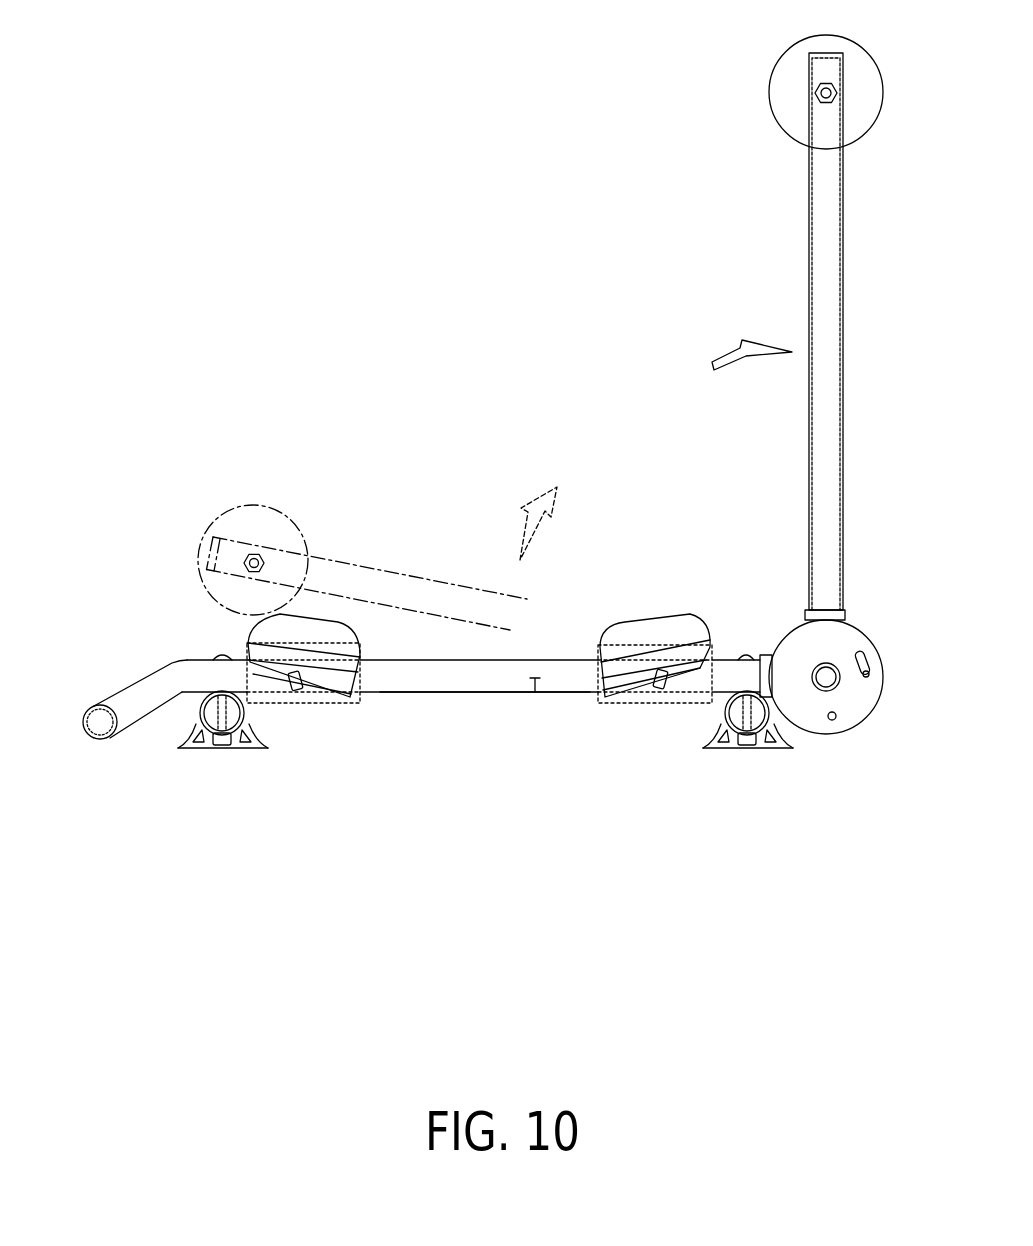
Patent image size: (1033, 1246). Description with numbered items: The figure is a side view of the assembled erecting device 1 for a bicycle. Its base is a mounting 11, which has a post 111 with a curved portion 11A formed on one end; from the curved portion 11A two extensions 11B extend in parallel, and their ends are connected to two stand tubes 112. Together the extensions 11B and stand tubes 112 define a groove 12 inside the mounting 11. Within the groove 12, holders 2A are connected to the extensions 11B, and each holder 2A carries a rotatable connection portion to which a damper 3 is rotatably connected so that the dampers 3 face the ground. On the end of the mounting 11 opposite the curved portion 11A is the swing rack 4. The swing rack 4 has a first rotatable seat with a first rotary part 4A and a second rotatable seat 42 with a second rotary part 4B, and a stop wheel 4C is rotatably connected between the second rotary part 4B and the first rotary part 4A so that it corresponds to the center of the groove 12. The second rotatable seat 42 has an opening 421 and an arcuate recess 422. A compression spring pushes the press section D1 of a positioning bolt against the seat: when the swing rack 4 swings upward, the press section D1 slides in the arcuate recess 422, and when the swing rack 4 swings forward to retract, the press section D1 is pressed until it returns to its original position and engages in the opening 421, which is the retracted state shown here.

The erecting device 1 is at (373, 288).
The swing rack 4 is at (810, 233).
The first rotary part 4A is at (825, 336).
The second rotary part 4B is at (828, 311).
The stop wheel 4C is at (788, 100).
The second rotatable seat 42 is at (785, 630).
The opening 421 is at (836, 722).
The arcuate recess 422 is at (873, 646).
The press section D1 is at (868, 676).
The mounting 11 is at (582, 657).
The post 111 is at (477, 676).
The curved portion 11A is at (140, 710).
The extension 11B is at (485, 693).
The groove 12 is at (535, 693).
The stand tube 112 is at (242, 722).
The holder 2A is at (307, 703).
The damper 3 is at (357, 663).